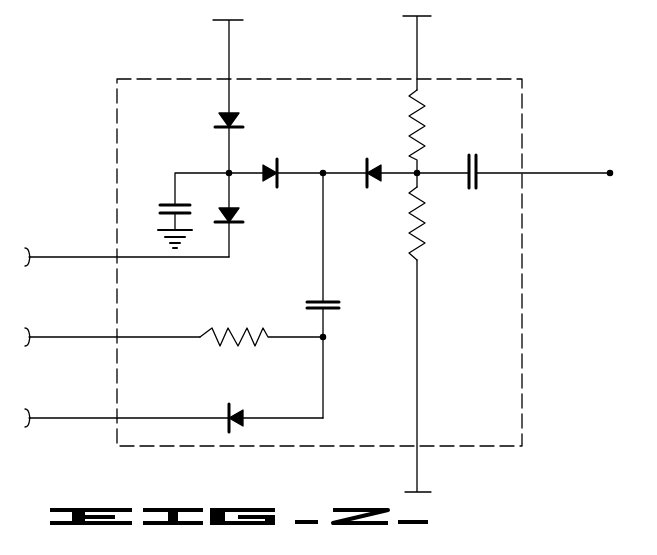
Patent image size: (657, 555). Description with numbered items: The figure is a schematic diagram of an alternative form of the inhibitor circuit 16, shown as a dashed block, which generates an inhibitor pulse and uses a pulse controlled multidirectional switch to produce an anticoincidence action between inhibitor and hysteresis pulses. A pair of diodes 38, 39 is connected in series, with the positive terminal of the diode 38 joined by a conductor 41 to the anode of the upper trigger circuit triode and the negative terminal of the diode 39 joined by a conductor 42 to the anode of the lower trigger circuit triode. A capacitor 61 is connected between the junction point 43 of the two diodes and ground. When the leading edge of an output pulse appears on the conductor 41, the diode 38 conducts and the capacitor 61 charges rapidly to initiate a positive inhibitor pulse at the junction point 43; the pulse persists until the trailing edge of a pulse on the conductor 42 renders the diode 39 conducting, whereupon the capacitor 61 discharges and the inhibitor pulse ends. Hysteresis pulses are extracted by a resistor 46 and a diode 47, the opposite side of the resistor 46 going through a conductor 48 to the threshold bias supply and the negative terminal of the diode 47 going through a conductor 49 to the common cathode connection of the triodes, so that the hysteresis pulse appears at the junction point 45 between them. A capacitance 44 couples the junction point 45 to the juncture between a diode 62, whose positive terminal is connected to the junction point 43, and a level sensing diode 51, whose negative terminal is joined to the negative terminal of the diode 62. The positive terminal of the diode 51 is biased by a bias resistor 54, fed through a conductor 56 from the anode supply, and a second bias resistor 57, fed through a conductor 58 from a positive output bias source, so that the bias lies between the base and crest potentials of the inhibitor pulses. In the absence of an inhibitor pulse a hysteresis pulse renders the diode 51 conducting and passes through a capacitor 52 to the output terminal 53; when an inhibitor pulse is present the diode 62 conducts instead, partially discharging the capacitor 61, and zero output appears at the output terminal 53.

The inhibitor circuit 16 is at (184, 68).
The conductor 41 is at (229, 49).
The diode 38 is at (237, 125).
The diode 39 is at (242, 212).
The junction point 43 is at (228, 172).
The capacitor 61 is at (166, 203).
The diode 62 is at (269, 166).
The level sensing diode 51 is at (376, 166).
The bias resistor 54 is at (424, 118).
The conductor 56 is at (418, 45).
The second bias resistor 57 is at (424, 244).
The conductor 58 is at (418, 465).
The capacitor 52 is at (478, 186).
The output terminal 53 is at (610, 176).
The conductor 42 is at (40, 256).
The conductor 48 is at (40, 336).
The resistor 46 is at (222, 330).
The junction point 45 is at (325, 337).
The capacitance 44 is at (338, 300).
The conductor 49 is at (40, 417).
The diode 47 is at (244, 412).